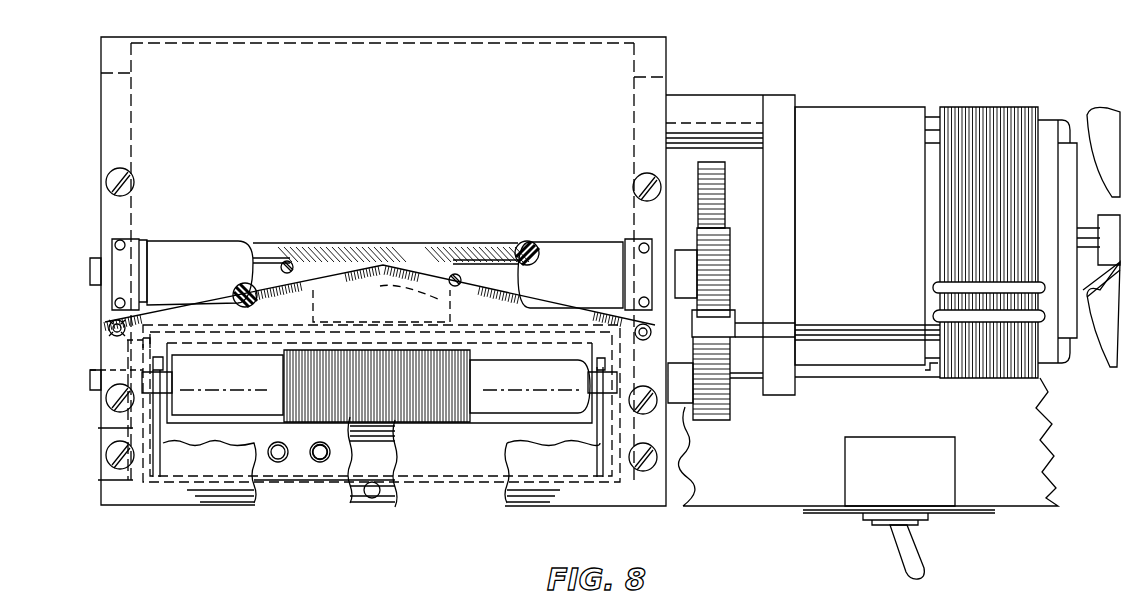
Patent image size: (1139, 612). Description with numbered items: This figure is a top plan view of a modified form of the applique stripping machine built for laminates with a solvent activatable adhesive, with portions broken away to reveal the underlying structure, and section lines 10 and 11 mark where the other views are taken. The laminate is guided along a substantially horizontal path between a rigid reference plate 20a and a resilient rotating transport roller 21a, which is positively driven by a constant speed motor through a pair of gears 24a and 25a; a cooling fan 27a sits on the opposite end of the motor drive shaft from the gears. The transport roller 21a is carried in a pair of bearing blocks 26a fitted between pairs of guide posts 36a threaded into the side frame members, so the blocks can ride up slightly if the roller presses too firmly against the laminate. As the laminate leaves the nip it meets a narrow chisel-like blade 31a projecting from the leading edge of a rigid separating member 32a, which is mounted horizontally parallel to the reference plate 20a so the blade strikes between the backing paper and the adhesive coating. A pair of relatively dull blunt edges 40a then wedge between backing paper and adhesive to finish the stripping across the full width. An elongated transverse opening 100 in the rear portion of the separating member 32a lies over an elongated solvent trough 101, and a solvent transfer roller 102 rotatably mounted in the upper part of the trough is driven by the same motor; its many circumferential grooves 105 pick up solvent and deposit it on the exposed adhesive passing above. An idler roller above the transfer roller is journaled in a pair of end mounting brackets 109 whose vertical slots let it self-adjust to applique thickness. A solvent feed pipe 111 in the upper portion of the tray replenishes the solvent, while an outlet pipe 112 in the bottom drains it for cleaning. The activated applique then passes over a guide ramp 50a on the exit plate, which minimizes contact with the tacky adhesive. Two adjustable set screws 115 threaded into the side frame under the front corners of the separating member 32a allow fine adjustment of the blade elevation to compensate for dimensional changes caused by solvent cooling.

The section line 10- 10 is at (394, 539).
The section line 11- 11 is at (752, 539).
The reference plate 20a is at (448, 243).
The transport roller 21a is at (207, 248).
The gear 24a is at (722, 192).
The gear 25a is at (722, 288).
The bearing block 26a is at (105, 252).
The cooling fan 27a is at (1097, 358).
The blade 31a is at (383, 245).
The separating member 32a is at (440, 300).
The guide post 36a is at (118, 240).
The blunt edge 40a is at (312, 283).
The guide ramp 50a is at (363, 478).
The transverse opening 100 is at (148, 355).
The trough 101 is at (105, 330).
The solvent transfer roller 102 is at (435, 427).
The circumferential grooves 105 is at (290, 430).
The mounting bracket 109 is at (157, 477).
The solvent feed pipe 111 is at (272, 443).
The outlet pipe 112 is at (314, 461).
The set screw 115 is at (112, 323).